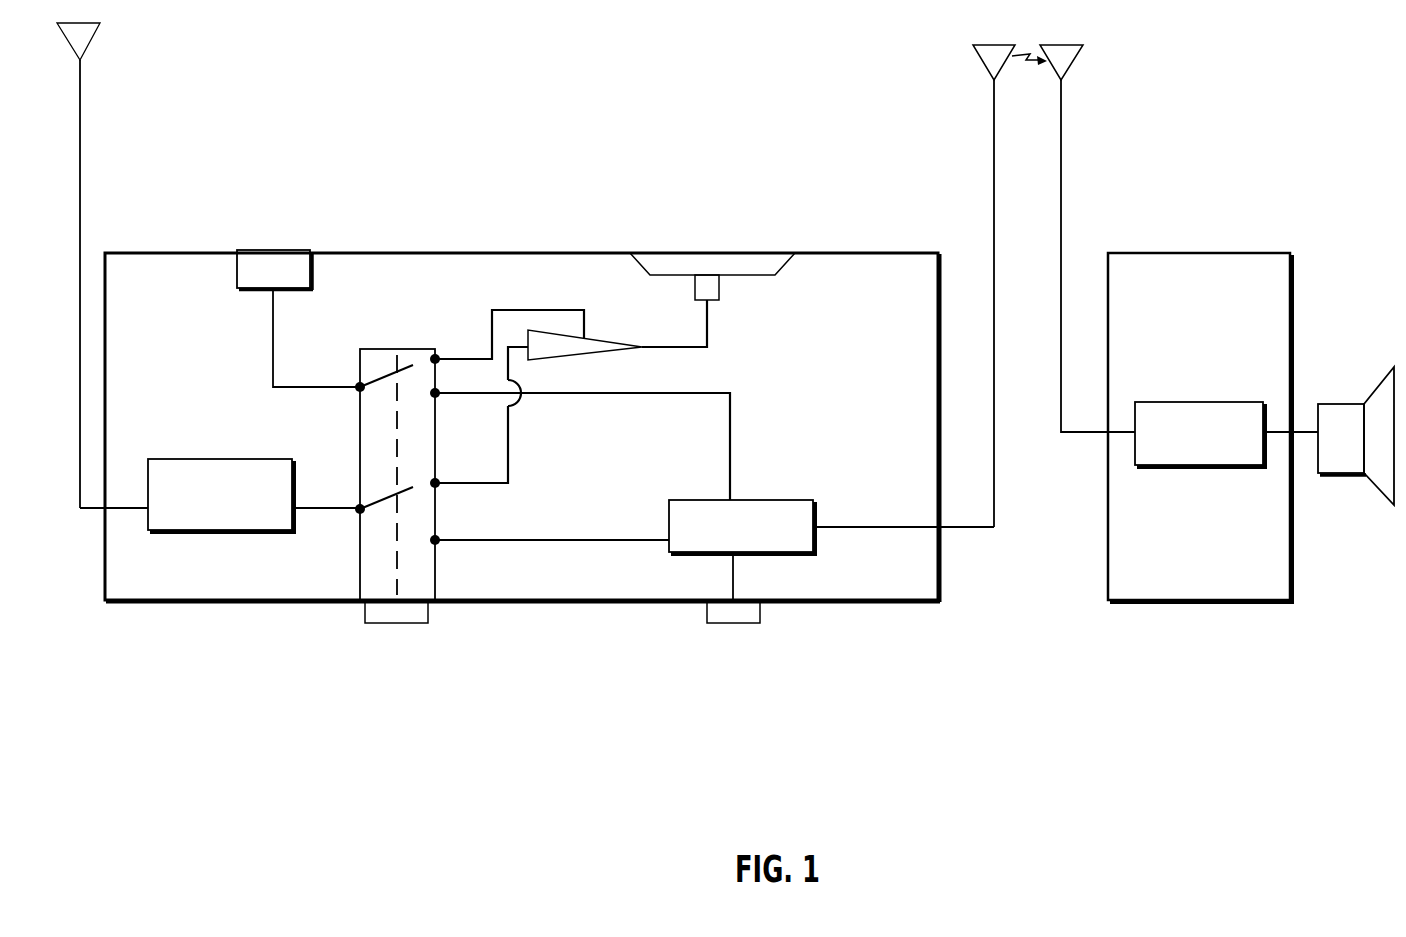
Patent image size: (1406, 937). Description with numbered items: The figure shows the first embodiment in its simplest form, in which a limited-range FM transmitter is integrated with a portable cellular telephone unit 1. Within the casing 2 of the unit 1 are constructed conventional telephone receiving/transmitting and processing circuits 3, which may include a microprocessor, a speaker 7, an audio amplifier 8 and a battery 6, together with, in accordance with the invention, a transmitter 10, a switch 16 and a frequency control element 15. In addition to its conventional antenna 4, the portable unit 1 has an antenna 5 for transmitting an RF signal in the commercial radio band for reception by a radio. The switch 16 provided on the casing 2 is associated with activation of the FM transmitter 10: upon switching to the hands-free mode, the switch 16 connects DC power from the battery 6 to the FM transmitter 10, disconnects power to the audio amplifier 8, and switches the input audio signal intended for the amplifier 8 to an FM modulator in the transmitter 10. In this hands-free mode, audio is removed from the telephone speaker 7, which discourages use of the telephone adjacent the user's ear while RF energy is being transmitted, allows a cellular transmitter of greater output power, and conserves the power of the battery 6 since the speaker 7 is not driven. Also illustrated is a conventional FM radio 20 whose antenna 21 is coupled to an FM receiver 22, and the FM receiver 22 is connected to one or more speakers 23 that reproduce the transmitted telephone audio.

The portable cellular telephone unit 1 is at (544, 91).
The casing 2 is at (170, 253).
The telephone receiving/transmitting and processing circuits 3 is at (165, 459).
The conventional antenna 4 is at (80, 34).
The antenna 5 is at (998, 59).
The battery 6 is at (258, 288).
The speaker 7 is at (748, 270).
The audio amplifier 8 is at (562, 348).
The transmitter 10 is at (757, 502).
The frequency control element 15 is at (748, 612).
The switch 16 is at (403, 623).
The FM radio 20 is at (1201, 382).
The antenna 21 is at (1067, 59).
The FM receiver 22 is at (1226, 406).
The speakers 23 is at (1346, 404).